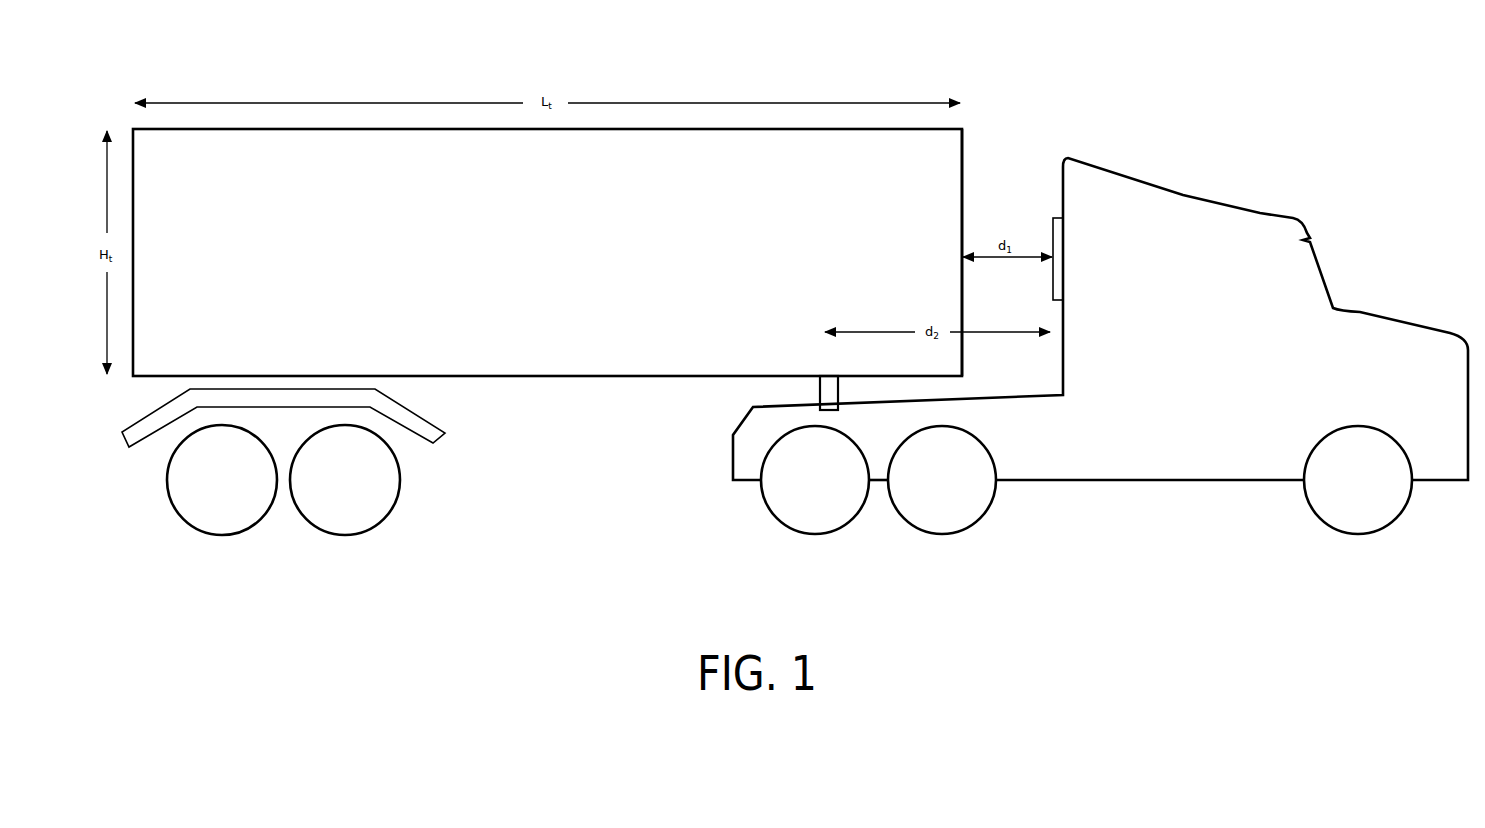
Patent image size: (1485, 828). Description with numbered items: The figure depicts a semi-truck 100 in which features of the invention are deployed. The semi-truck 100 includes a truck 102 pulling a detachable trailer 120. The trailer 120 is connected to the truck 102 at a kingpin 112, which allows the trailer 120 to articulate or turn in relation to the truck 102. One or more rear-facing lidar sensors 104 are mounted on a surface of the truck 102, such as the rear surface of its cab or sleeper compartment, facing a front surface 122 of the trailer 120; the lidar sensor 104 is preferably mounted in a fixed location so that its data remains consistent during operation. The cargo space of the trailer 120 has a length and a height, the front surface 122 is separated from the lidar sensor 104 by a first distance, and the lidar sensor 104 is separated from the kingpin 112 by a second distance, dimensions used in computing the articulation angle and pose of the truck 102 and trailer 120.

The semi-truck 100 is at (1222, 95).
The truck 102 is at (1265, 207).
The lidar sensor 104 is at (1052, 235).
The kingpin 112 is at (830, 378).
The trailer 120 is at (547, 393).
The front surface 122 is at (965, 163).